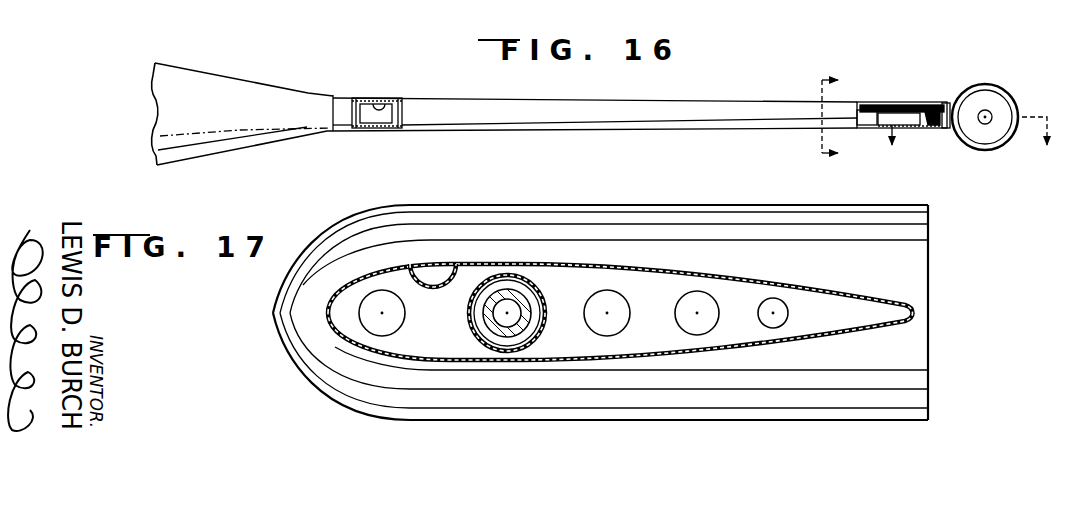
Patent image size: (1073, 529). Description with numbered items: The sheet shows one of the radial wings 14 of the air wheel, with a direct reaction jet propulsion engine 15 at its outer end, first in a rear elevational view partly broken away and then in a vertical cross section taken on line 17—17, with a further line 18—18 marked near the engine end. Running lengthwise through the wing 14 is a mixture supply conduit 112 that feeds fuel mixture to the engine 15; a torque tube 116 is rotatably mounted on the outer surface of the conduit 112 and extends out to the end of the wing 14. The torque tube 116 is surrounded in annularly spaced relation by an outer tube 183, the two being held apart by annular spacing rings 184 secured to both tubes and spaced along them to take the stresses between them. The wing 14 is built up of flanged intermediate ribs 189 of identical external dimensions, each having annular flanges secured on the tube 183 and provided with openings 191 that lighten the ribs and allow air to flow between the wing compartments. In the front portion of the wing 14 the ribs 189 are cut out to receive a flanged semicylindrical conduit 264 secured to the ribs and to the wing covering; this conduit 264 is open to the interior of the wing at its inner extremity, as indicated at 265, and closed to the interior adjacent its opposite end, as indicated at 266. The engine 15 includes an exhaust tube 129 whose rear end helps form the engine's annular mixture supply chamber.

In FIG. 17, the wing 14 is at (905, 292).
In FIG. 16, the direct reaction jet propulsion engine 15 is at (1004, 83).
In FIG. 17, the direct reaction jet propulsion engine 15 is at (600, 423).
In FIG. 16, the section line 17- 17 is at (845, 119).
In FIG. 16, the section line 18- 18 is at (966, 144).
In FIG. 17, the mixture supply conduit 112 is at (518, 328).
In FIG. 17, the torque tube 116 is at (503, 326).
In FIG. 16, the exhaust tube 129 is at (983, 137).
In FIG. 17, the tube 183 is at (522, 281).
In FIG. 17, the annular spacing ring 184 is at (495, 282).
In FIG. 16, the intermediate rib 189 is at (932, 114).
In FIG. 17, the intermediate rib 189 is at (737, 330).
In FIG. 17, the opening 191 is at (405, 313).
In FIG. 16, the flanged semicylindrical conduit 264 is at (392, 101).
In FIG. 17, the flanged semicylindrical conduit 264 is at (422, 286).
In FIG. 16, the open inner extremity of conduit 265 is at (355, 98).
In FIG. 16, the closed end of conduit 266 is at (935, 107).